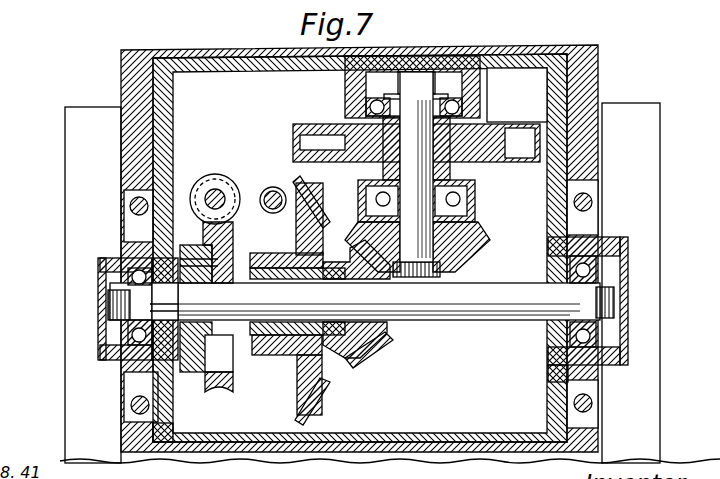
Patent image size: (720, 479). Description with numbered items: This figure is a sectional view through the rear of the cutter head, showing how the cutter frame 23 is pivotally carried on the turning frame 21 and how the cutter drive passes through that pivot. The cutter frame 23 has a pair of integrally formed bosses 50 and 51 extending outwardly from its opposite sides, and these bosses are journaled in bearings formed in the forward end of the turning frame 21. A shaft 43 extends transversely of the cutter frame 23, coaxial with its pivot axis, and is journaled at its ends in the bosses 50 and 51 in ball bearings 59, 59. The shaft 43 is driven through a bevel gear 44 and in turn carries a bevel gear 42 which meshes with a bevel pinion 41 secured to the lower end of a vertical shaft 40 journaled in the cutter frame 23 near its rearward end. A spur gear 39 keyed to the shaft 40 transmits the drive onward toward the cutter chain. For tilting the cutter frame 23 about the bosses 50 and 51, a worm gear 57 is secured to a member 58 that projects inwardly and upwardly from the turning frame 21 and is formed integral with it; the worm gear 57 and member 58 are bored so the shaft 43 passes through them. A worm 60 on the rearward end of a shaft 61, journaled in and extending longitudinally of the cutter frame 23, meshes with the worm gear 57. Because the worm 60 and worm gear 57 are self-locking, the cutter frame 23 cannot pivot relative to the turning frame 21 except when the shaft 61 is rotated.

The turning frame 21 is at (600, 68).
The cutter frame 23 is at (547, 195).
The spur gear 39 is at (293, 132).
The shaft 40 is at (440, 145).
The bevel pinion 41 is at (468, 263).
The bevel gear 42 is at (378, 360).
The shaft 43 is at (504, 321).
The bevel gear 44 is at (318, 407).
The boss 50 is at (136, 241).
The boss 51 is at (598, 237).
The worm gear 57 is at (236, 386).
The member 58 is at (200, 407).
The ball bearings 59 is at (104, 336).
The worm 60 is at (218, 180).
The shaft 61 is at (224, 212).